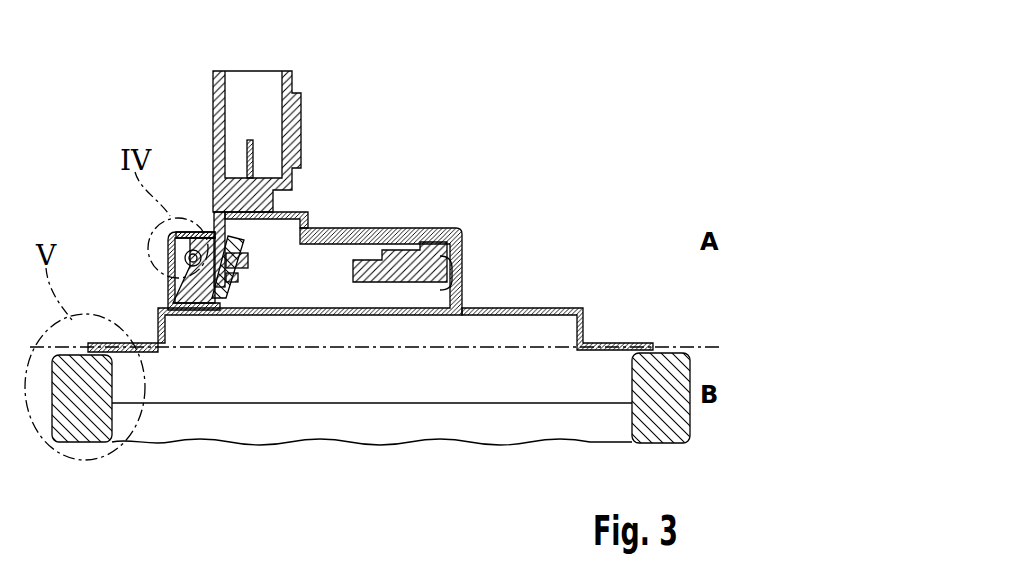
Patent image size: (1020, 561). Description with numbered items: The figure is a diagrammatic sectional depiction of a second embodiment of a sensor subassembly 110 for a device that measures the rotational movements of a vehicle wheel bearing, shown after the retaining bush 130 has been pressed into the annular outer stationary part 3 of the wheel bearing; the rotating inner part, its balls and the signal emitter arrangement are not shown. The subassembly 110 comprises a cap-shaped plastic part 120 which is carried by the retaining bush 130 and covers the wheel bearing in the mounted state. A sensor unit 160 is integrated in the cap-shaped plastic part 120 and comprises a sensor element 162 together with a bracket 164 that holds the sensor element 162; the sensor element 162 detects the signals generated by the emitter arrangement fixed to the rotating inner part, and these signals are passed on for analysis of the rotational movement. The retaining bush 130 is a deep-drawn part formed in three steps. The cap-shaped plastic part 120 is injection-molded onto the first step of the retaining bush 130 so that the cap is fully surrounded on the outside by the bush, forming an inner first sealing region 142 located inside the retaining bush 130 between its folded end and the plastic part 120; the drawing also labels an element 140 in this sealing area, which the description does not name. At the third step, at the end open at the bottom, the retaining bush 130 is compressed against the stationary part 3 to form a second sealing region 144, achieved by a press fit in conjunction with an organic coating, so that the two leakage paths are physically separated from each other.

The sensor subassembly 110 is at (516, 151).
The cap-shaped plastic part 120 is at (338, 238).
The retaining bush 130 is at (517, 307).
The sealing wall 140 is at (181, 253).
The first sealing region 142 is at (183, 221).
The second sealing region 144 is at (117, 420).
The sensor unit 160 is at (259, 233).
The sensor element 162 is at (200, 305).
The bracket 164 is at (243, 272).
The stationary part of the wheel bearing 3 is at (660, 372).